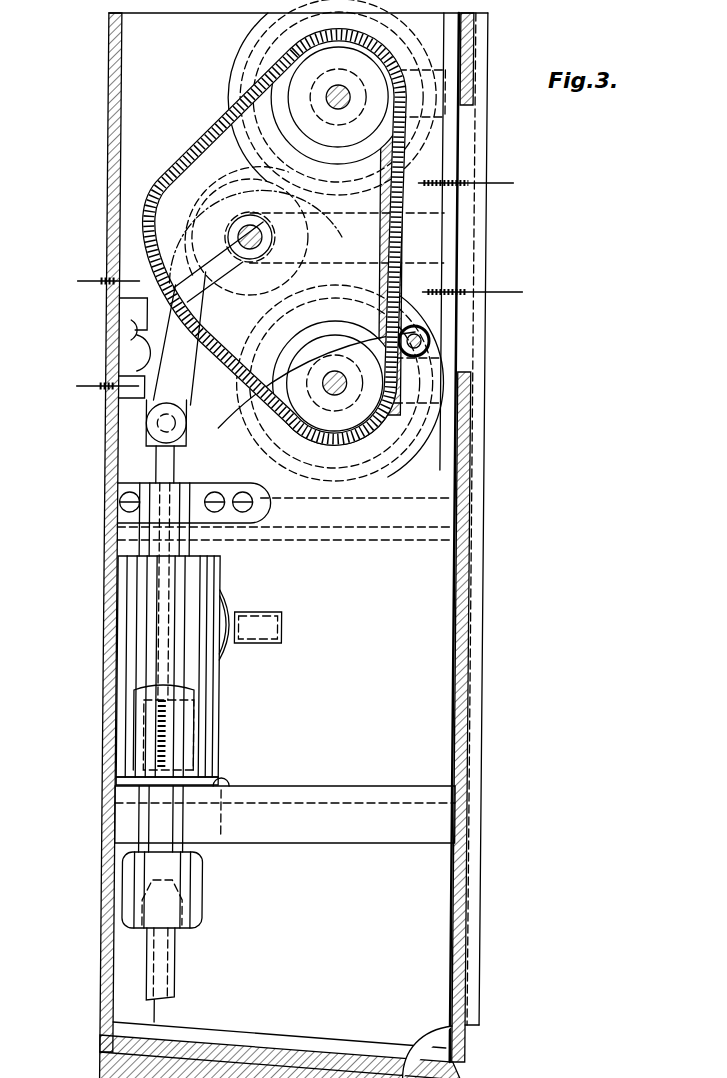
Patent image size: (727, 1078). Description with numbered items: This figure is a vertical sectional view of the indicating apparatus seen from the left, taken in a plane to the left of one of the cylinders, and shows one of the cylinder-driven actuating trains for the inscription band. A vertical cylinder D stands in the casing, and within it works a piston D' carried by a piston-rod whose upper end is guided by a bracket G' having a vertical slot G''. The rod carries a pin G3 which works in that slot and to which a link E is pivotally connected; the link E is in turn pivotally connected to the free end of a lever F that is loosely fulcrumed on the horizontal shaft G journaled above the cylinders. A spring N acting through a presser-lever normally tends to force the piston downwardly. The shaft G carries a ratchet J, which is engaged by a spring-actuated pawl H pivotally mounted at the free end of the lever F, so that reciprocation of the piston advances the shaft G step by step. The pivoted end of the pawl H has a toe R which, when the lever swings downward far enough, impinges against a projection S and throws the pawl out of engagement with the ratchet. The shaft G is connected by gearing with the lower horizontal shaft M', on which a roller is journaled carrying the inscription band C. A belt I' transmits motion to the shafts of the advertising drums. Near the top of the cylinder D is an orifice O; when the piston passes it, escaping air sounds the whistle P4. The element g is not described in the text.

The horizontal shaft M' is at (338, 97).
The spring N is at (348, 342).
The band C is at (433, 243).
The belt I' is at (476, 237).
The spring-actuated pawl H is at (155, 206).
The ratchet J is at (255, 231).
The horizontal shaft G is at (262, 237).
The lever F is at (227, 258).
The link E is at (184, 376).
The toe R is at (147, 313).
The projection S is at (148, 322).
The vertical slot G'' is at (88, 382).
The bracket G' is at (115, 441).
The pin G3 is at (154, 441).
The cylinder D is at (184, 666).
The piston D' is at (202, 727).
The orifice O is at (238, 622).
The whistle P4 is at (258, 644).
The foot g is at (445, 1042).